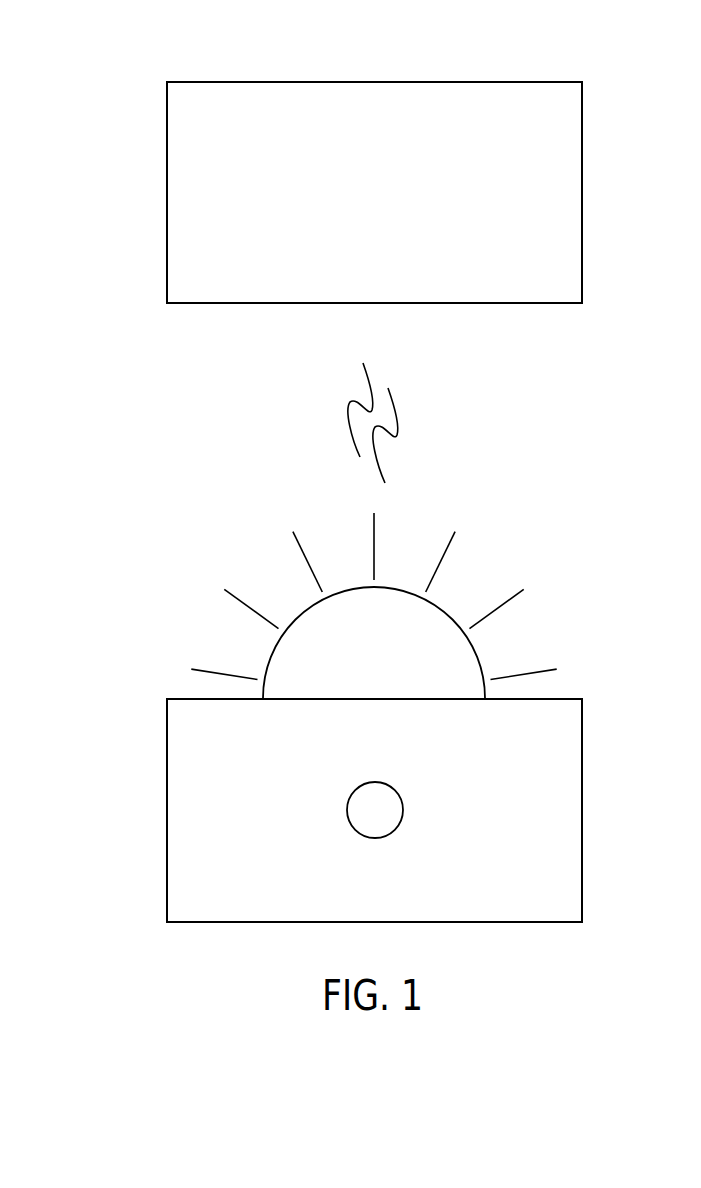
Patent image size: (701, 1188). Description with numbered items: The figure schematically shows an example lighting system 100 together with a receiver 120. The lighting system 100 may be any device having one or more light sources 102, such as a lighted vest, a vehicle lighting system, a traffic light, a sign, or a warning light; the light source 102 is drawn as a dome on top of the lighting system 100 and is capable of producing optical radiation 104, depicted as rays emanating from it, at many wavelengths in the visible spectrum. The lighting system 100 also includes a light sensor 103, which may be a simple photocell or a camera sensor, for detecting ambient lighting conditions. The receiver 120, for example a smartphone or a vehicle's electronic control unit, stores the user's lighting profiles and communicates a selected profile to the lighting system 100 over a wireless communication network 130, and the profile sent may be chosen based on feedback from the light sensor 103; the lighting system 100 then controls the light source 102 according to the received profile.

The lighting system 100 is at (324, 810).
The light source 102 is at (314, 642).
The light sensor 103 is at (403, 810).
The optical radiation 104 is at (329, 579).
The receiver 120 is at (317, 166).
The wireless communication network 130 is at (299, 412).